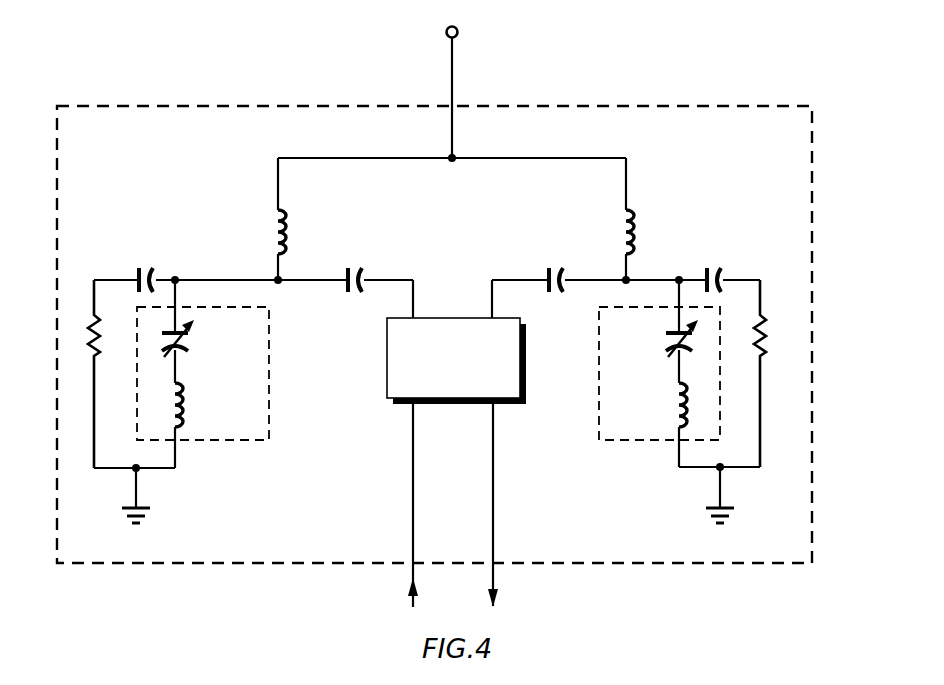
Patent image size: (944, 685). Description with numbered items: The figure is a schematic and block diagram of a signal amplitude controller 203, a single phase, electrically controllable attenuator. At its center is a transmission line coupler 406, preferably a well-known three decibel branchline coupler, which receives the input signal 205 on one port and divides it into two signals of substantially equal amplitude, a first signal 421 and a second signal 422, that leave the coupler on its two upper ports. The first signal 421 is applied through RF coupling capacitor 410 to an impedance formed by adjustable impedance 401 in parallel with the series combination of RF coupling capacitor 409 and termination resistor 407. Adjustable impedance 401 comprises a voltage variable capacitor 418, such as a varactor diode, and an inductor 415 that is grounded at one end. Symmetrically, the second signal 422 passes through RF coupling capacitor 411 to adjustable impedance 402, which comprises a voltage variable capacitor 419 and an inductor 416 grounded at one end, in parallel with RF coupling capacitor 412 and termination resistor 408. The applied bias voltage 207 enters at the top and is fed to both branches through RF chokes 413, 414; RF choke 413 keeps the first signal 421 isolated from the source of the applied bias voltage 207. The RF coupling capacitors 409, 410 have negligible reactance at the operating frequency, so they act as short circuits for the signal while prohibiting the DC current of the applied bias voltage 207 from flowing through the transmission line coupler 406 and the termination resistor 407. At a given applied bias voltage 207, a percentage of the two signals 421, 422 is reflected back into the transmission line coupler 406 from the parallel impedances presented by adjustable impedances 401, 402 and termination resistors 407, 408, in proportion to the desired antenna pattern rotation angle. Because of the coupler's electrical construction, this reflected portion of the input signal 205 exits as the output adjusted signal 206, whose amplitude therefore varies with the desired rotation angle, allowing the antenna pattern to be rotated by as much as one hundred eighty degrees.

The signal amplitude controller 203 is at (737, 50).
The applied bias voltage 207 is at (452, 72).
The input signal 205 is at (413, 453).
The output adjusted signal 206 is at (493, 440).
The adjustable impedance 401 is at (269, 365).
The adjustable impedance 402 is at (599, 372).
The transmission line coupler 406 is at (387, 348).
The termination resistor 407 is at (98, 353).
The termination resistor 408 is at (760, 332).
The RF coupling capacitor 409 is at (146, 266).
The RF coupling capacitor 410 is at (355, 262).
The RF coupling capacitor 411 is at (559, 262).
The RF coupling capacitor 412 is at (712, 262).
The RF choke 413 is at (288, 222).
The RF choke 414 is at (636, 212).
The inductor 415 is at (188, 398).
The inductor 416 is at (678, 405).
The voltage variable capacitor 418 is at (191, 342).
The voltage variable capacitor 419 is at (664, 342).
The first signal 421 is at (413, 278).
The second signal 422 is at (492, 303).